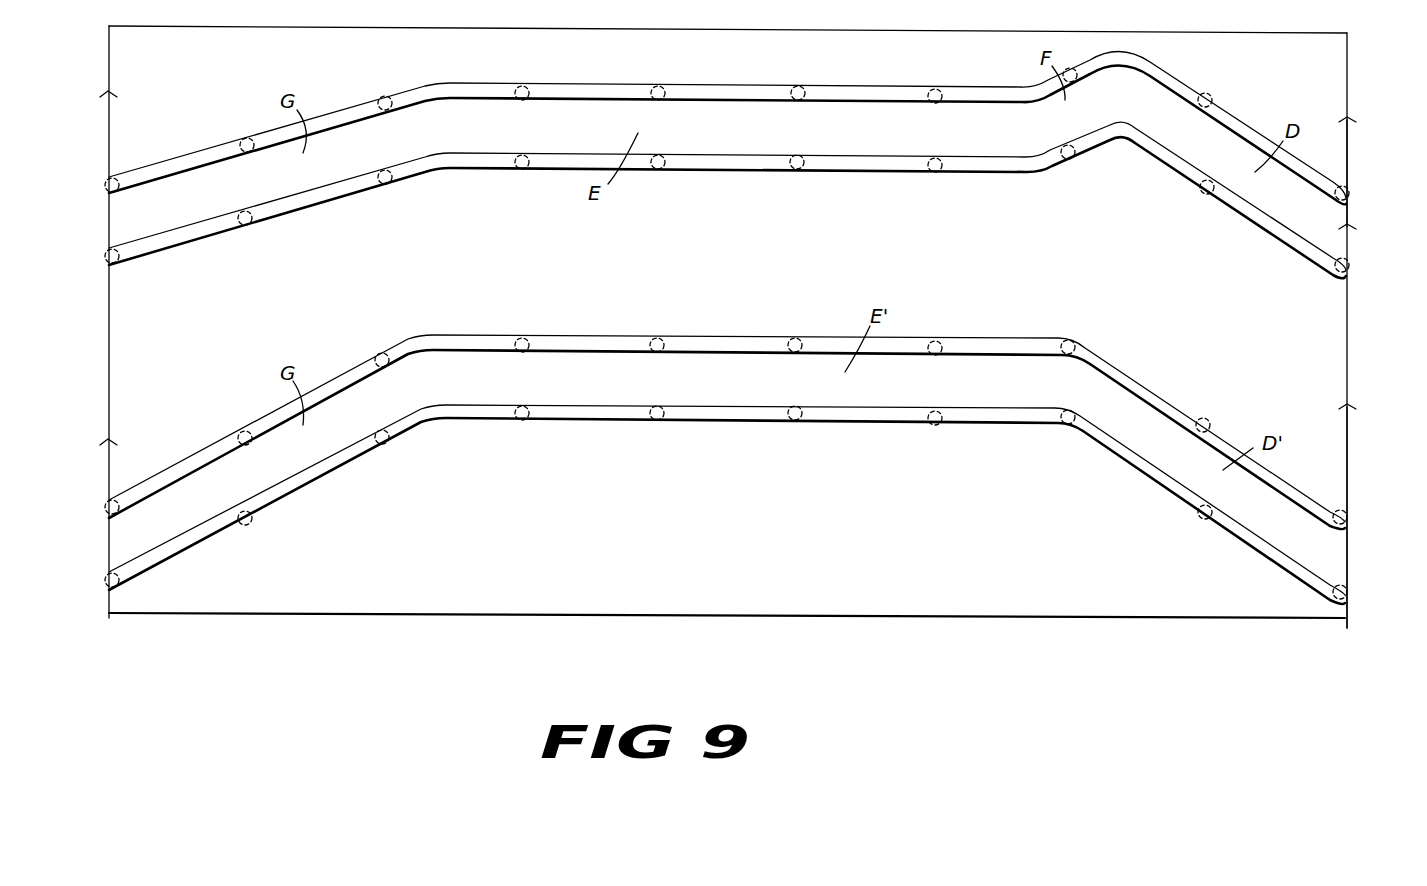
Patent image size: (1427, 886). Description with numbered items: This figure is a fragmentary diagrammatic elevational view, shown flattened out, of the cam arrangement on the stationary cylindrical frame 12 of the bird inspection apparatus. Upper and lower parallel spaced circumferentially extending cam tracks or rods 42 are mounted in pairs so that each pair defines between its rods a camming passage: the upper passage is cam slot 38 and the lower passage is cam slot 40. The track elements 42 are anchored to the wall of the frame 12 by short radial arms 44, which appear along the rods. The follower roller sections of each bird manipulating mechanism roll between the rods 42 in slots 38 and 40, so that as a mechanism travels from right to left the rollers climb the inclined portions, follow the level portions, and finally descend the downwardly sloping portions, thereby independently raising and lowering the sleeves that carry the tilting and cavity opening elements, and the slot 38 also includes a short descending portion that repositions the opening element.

The stationary cylindrical frame 12 is at (857, 602).
The camming passage 38 is at (1349, 228).
The camming passage 40 is at (1348, 554).
The cam tracks or rods 42 is at (708, 92).
The short radial arms 44 is at (240, 141).